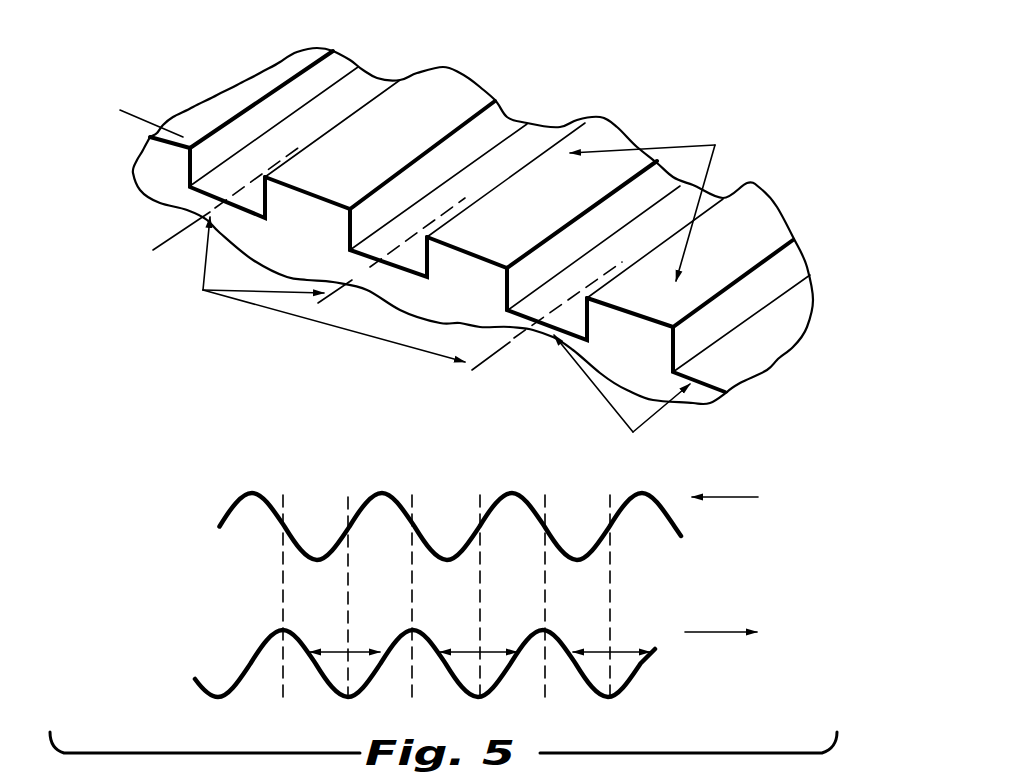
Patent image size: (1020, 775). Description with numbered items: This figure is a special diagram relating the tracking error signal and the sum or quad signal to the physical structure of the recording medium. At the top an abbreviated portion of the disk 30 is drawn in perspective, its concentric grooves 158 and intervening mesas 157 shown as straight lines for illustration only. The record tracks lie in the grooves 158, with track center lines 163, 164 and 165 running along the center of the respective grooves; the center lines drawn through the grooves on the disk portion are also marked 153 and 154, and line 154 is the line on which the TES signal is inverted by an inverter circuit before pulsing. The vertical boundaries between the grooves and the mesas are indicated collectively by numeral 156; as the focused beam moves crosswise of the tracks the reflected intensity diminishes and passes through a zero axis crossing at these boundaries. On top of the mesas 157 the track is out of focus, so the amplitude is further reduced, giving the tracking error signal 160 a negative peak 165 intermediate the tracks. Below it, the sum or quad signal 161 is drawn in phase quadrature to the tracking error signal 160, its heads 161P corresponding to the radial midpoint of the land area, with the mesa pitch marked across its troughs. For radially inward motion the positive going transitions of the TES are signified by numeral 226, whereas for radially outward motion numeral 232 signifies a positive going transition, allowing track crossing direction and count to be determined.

The disk 30 is at (484, 77).
The mesas 157 is at (630, 648).
The grooves 158 is at (373, 220).
The vertical boundaries between grooves and mesas 156 is at (327, 124).
The track center line 153 is at (173, 237).
The line 154 is at (358, 283).
The track center line 165 is at (490, 358).
The tracking error signal 160 is at (249, 493).
The sum or quad signal 161 is at (279, 632).
The positive going transition (radially outward motion) 232 is at (282, 529).
The positive going transition (radially inward motion) 226 is at (346, 527).
The track center line 163 is at (280, 690).
The track center line 164 is at (413, 690).
The heads of the sum signal 161P is at (350, 701).